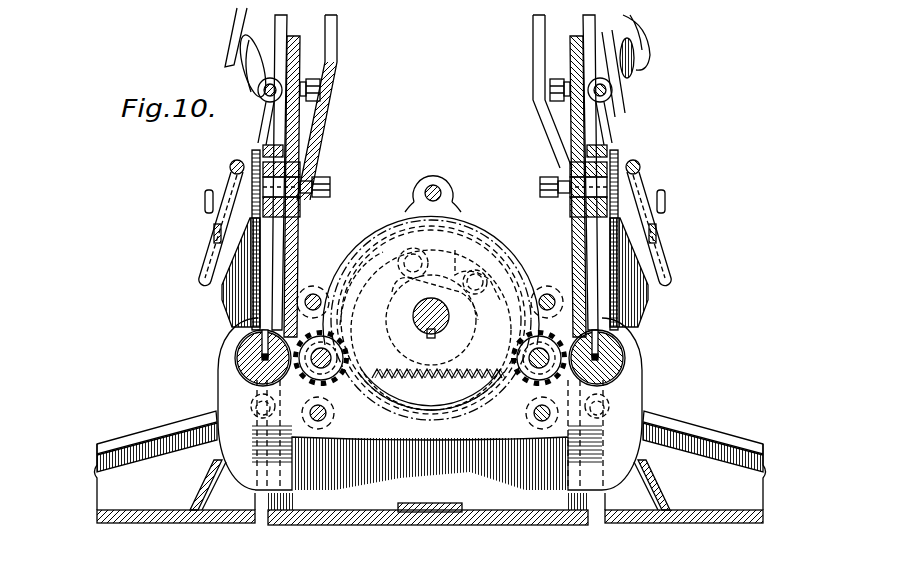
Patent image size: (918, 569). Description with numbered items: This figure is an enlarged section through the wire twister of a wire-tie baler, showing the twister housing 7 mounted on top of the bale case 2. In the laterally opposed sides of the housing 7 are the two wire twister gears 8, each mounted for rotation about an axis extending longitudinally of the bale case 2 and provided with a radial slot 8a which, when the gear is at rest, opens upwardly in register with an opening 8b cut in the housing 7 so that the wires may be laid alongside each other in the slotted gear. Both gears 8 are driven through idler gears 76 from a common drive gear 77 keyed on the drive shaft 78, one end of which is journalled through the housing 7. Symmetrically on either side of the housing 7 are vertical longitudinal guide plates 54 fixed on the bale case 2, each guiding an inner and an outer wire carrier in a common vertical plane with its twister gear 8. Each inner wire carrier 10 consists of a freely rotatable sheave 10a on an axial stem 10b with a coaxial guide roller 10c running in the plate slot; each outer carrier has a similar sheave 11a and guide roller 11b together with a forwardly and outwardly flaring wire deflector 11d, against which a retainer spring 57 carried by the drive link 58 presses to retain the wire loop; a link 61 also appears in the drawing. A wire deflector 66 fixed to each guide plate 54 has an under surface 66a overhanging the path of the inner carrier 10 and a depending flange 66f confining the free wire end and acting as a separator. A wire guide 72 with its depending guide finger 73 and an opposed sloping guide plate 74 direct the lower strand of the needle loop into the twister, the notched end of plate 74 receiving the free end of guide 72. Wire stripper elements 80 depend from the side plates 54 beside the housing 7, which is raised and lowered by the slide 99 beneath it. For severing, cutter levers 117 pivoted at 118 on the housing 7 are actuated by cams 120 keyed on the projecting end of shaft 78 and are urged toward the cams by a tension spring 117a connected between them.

The bale case 2 is at (140, 526).
The twister housing 7 is at (468, 203).
The wire twister gear 8 is at (238, 357).
The radial slot 8a is at (240, 342).
The housing opening 8b is at (248, 325).
The inner wire carrier 10 is at (590, 220).
The sheave 10a is at (292, 215).
The axial stem 10b is at (330, 192).
The guide roller 10c is at (323, 165).
The sheave 11a is at (240, 34).
The guide roller 11b is at (297, 72).
The wire deflector 11d is at (241, 66).
The guide plate 54 is at (297, 248).
The retainer spring 57 is at (650, 60).
The drive link 58 is at (283, 20).
The link 61 is at (337, 42).
The wire deflector 66 is at (262, 140).
The under surface 66a is at (253, 162).
The depending flange 66f is at (245, 294).
The wire guide 72 is at (230, 165).
The guide finger 73 is at (200, 270).
The guide plate 74 is at (206, 200).
The idler gear 76 is at (328, 387).
The drive gear 77 is at (494, 238).
The drive shaft 78 is at (418, 332).
The wire stripper element 80 is at (640, 418).
The slide 99 is at (465, 505).
The cutter lever 117 is at (383, 258).
The tension spring 117a is at (431, 404).
The pivot 118 is at (245, 395).
The cam 120 is at (434, 407).